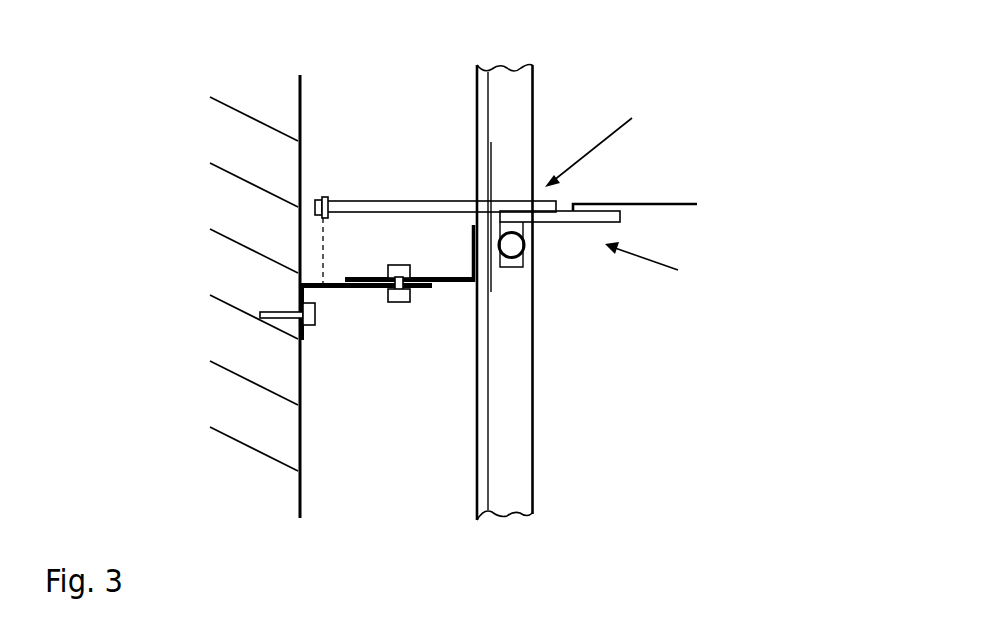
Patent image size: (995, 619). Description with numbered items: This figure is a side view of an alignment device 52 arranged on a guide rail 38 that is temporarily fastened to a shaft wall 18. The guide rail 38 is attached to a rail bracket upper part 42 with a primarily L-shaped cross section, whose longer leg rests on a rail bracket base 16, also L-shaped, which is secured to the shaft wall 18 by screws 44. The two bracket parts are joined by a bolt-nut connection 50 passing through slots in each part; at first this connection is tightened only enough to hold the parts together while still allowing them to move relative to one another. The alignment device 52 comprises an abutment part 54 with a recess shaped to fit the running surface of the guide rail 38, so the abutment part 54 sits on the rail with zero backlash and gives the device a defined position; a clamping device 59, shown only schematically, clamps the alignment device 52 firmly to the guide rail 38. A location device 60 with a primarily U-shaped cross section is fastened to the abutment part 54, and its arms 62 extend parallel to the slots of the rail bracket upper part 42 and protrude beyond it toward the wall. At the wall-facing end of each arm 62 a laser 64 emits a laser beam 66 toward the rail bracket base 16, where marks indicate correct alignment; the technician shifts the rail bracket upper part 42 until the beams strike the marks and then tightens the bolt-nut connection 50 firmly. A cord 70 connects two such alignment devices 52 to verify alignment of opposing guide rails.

The rail bracket base 16 is at (340, 287).
The shaft wall 18 is at (282, 95).
The guide rail 38 is at (517, 92).
The rail bracket upper part 42 is at (452, 280).
The screw 44 is at (313, 325).
The bolt-nut connection 50 is at (400, 302).
The alignment device 52 is at (657, 265).
The abutment part 54 is at (562, 222).
The clamping device 59 is at (513, 267).
The location device 60 is at (599, 141).
The arm 62 is at (362, 201).
The laser 64 is at (323, 195).
The laser beam 66 is at (322, 245).
The cord 70 is at (653, 202).